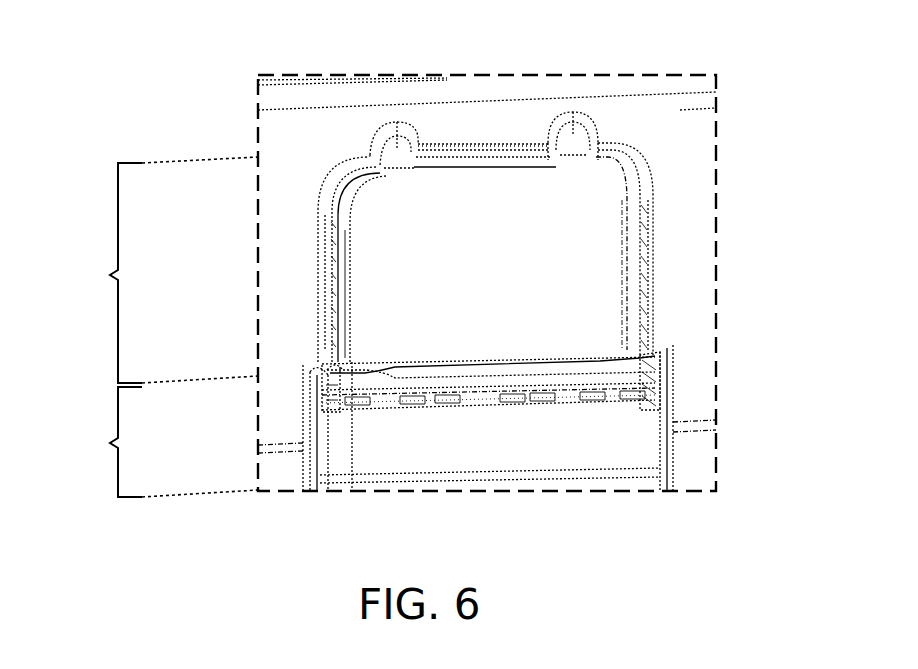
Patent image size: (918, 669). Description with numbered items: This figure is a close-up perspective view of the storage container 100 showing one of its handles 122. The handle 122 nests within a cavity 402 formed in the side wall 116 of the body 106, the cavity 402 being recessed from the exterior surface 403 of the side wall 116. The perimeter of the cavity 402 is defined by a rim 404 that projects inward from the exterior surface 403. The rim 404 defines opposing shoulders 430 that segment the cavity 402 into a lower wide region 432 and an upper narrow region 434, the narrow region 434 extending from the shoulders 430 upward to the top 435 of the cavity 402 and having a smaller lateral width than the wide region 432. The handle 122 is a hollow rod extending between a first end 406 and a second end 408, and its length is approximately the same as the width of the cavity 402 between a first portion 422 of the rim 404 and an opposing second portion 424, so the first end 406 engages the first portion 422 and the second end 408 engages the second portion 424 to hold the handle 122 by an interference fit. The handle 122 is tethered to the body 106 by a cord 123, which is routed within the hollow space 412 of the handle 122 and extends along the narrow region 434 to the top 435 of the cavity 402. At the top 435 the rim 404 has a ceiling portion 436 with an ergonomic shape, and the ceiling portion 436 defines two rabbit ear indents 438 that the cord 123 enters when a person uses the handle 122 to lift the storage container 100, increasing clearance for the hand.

The storage container 100 is at (113, 118).
The body 106 is at (281, 138).
The side wall 116 is at (690, 120).
The narrow region 434 is at (108, 276).
The wide region 432 is at (108, 444).
The cavity 402 is at (330, 244).
The exterior surface 403 is at (680, 232).
The rim 404 is at (352, 178).
The ceiling portion 436 is at (457, 162).
The top of the cavity 435 is at (512, 145).
The rabbit ear indents 438 is at (573, 104).
The handle 122 is at (465, 368).
The cord 123 is at (343, 332).
The shoulders 430 is at (322, 373).
The first end 406 is at (322, 393).
The second end 408 is at (658, 374).
The hollow space 412 is at (357, 404).
The first portion of the rim 422 is at (320, 420).
The second portion of the rim 424 is at (653, 417).